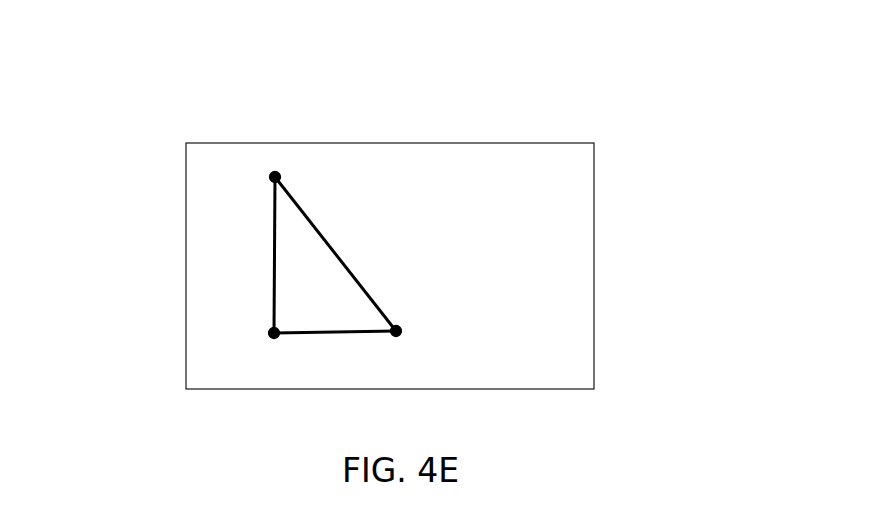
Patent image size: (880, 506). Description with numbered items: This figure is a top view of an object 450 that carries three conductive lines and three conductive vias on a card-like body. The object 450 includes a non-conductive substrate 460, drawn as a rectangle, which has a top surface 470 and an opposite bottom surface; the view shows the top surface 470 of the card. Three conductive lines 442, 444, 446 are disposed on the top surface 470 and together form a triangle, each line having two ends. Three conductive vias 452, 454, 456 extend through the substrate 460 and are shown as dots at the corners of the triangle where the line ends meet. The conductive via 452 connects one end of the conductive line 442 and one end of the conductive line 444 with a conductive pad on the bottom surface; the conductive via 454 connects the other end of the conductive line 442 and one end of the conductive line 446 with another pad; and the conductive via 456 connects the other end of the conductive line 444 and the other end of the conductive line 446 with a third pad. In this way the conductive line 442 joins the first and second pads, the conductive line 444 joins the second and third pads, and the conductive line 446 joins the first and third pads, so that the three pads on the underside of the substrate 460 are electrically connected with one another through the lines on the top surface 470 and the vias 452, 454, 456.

The object 450 is at (183, 100).
The non-conductive substrate 460 is at (546, 165).
The top surface 470 is at (562, 350).
The conductive line 442 is at (272, 268).
The conductive line 444 is at (305, 210).
The conductive line 446 is at (312, 335).
The conductive via 452 is at (270, 177).
The conductive via 454 is at (268, 334).
The conductive via 456 is at (398, 335).